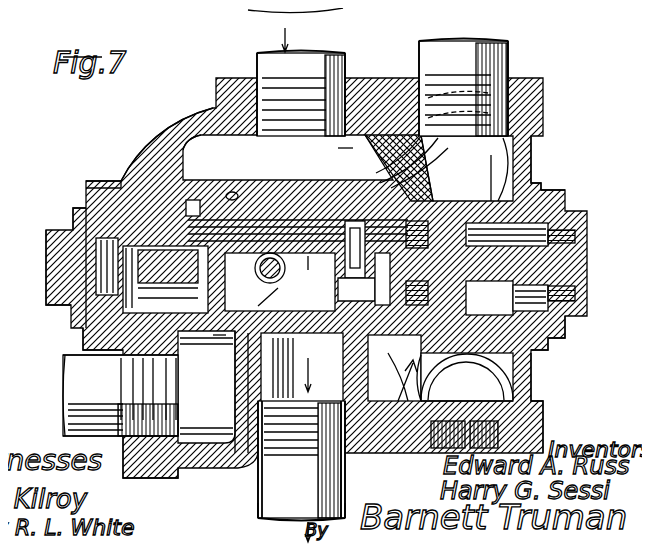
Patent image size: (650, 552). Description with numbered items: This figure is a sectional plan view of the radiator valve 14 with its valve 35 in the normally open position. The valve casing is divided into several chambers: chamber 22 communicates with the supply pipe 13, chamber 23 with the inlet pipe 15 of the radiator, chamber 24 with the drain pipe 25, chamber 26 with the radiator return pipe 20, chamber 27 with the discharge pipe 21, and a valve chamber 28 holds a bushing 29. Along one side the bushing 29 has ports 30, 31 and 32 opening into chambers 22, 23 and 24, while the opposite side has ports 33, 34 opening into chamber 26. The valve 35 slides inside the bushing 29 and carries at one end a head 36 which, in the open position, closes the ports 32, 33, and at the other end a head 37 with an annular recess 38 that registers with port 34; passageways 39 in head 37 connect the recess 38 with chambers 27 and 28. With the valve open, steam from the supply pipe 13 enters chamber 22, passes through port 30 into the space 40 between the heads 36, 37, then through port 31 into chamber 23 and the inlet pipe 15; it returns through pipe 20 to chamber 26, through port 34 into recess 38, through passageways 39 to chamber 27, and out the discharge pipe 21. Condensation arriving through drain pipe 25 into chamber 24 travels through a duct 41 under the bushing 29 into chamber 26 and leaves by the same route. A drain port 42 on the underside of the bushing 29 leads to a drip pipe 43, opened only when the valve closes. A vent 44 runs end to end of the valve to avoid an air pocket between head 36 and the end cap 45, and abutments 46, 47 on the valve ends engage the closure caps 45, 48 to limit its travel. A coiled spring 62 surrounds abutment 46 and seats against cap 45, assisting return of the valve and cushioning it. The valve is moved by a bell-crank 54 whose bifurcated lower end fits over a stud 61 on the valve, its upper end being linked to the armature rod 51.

The supply pipe 13 is at (537, 363).
The radiator valve 14 is at (133, 162).
The inlet pipe 15 is at (248, 498).
The radiator return pipe 20 is at (330, 53).
The discharge pipe 21 is at (463, 40).
The chamber 22 is at (390, 395).
The chamber 23 is at (250, 458).
The chamber 24 is at (193, 420).
The drain pipe 25 is at (94, 395).
The chamber 26 is at (326, 171).
The chamber 27 is at (483, 147).
The valve chamber 28 is at (557, 315).
The bushing 29 is at (203, 175).
The port 30 is at (392, 368).
The port 31 is at (302, 368).
The port 32 is at (187, 325).
The port 33 is at (163, 127).
The port 34 is at (397, 154).
The valve 35 is at (335, 173).
The head 36 is at (276, 282).
The head 37 is at (405, 268).
The annular recess 38 is at (423, 362).
The passageways 39 is at (467, 224).
The space 40 is at (217, 323).
The duct 41 is at (224, 184).
The drain port 42 is at (75, 323).
The drip pipe 43 is at (92, 173).
The vent 44 is at (331, 163).
The end cap 45 is at (63, 232).
The abutment 46 is at (85, 293).
The abutment 47 is at (567, 229).
The closure cap 48 is at (580, 250).
The rod 51 is at (288, 265).
The bell-crank 54 is at (270, 298).
The stud 61 is at (387, 172).
The coiled spring 62 is at (77, 262).